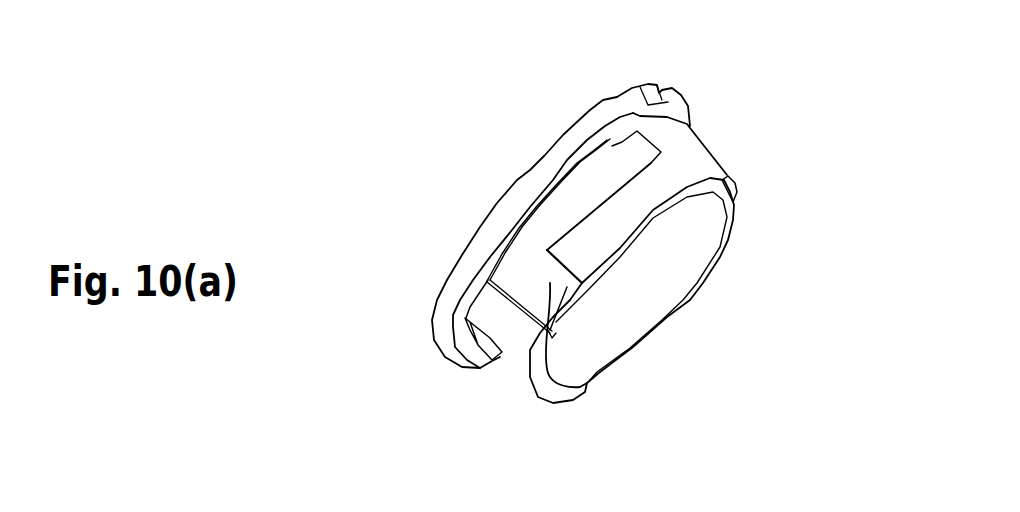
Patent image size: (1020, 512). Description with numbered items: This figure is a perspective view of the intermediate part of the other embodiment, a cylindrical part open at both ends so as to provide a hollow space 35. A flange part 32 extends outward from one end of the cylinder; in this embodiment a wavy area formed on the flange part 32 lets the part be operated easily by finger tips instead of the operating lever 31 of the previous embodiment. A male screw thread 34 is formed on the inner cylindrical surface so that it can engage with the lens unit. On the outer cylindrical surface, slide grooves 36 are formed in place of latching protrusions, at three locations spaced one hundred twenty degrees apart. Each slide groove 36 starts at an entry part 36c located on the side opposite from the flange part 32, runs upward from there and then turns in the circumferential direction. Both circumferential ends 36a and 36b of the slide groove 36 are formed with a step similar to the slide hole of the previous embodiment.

The operating lever 31 is at (651, 93).
The flange part 32 is at (464, 268).
The male screw thread 34 is at (680, 263).
The hollow space 35 is at (647, 286).
The slide groove 36 is at (734, 181).
The end of the slide groove 36a is at (546, 226).
The end of the slide groove 36b is at (636, 156).
The entry part 36c is at (563, 300).